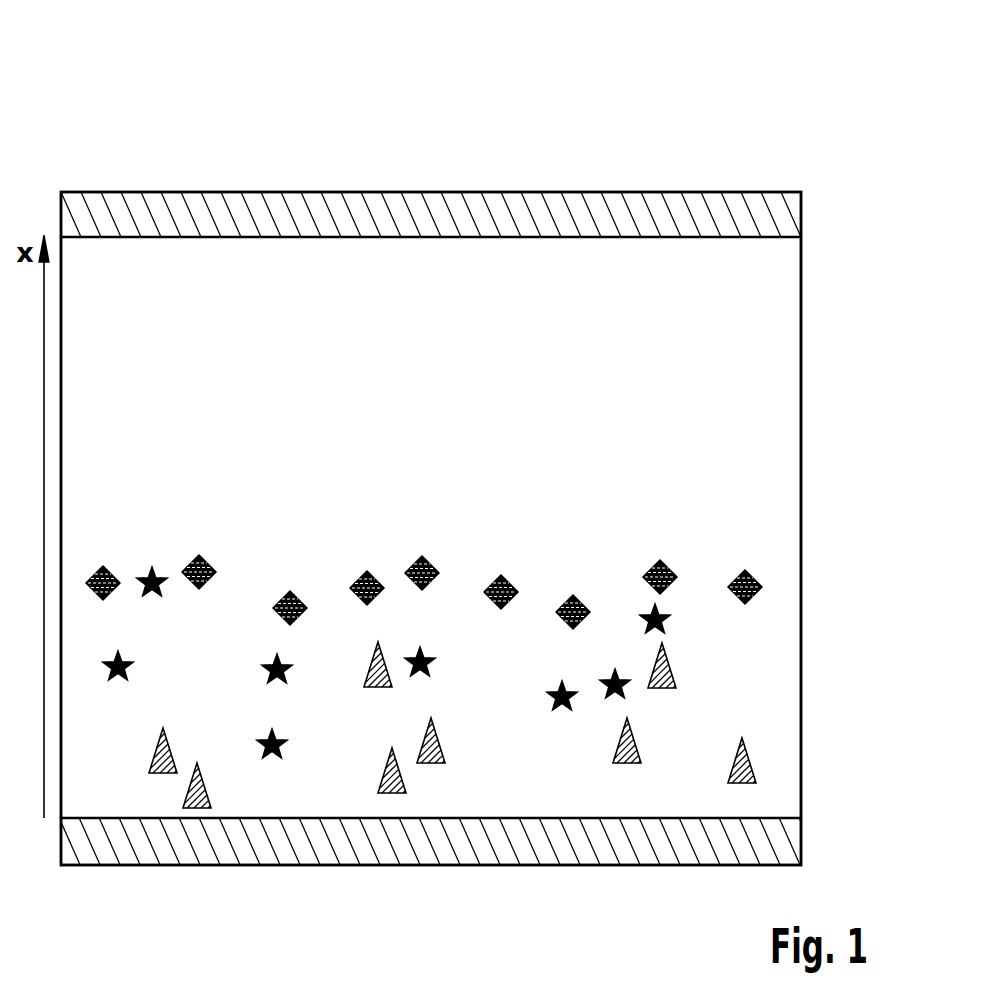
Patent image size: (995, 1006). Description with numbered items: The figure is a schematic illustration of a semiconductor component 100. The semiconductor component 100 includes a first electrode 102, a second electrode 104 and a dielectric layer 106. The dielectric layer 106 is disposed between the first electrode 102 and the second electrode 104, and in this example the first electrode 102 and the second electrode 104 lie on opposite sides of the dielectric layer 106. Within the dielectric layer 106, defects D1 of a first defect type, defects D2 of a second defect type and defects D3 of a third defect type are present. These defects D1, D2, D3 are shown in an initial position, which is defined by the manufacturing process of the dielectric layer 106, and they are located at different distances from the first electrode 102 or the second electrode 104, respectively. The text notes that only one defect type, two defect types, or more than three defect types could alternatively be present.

The semiconductor component 100 is at (126, 124).
The first electrode 102 is at (778, 215).
The second electrode 104 is at (780, 840).
The dielectric layer 106 is at (780, 440).
The defects of a first defect type D1 is at (152, 750).
The defects of a second defect type D2 is at (162, 590).
The defects of a third defect type D3 is at (103, 565).